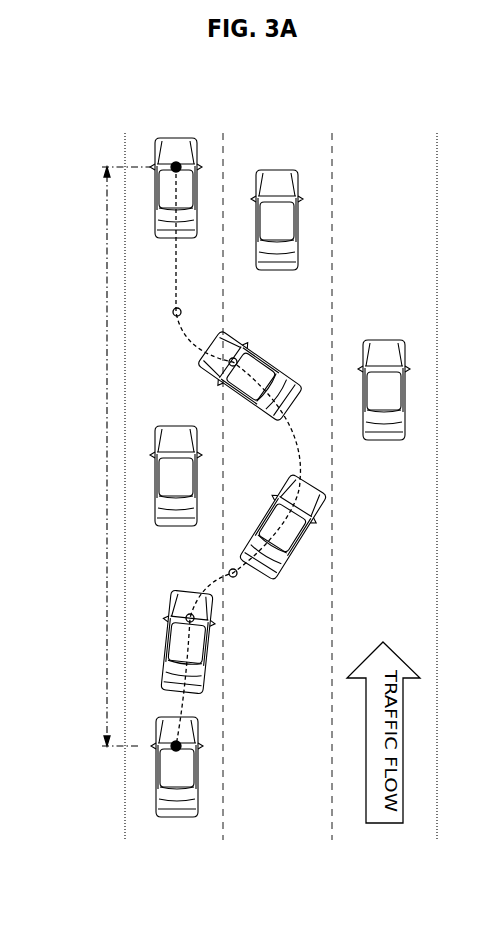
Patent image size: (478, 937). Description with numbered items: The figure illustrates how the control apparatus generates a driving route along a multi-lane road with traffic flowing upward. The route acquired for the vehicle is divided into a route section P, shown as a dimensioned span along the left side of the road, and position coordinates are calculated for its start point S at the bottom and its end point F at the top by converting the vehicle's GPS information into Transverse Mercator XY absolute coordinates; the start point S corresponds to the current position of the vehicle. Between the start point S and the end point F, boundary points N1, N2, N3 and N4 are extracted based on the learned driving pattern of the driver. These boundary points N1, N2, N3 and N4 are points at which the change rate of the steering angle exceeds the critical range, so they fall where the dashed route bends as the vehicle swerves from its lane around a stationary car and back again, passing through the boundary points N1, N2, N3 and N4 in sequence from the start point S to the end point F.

The end point F is at (171, 188).
The start point S is at (171, 767).
The boundary point N1 is at (177, 642).
The boundary point N2 is at (280, 542).
The boundary point N3 is at (250, 376).
The boundary point N4 is at (161, 318).
The route section P is at (117, 456).